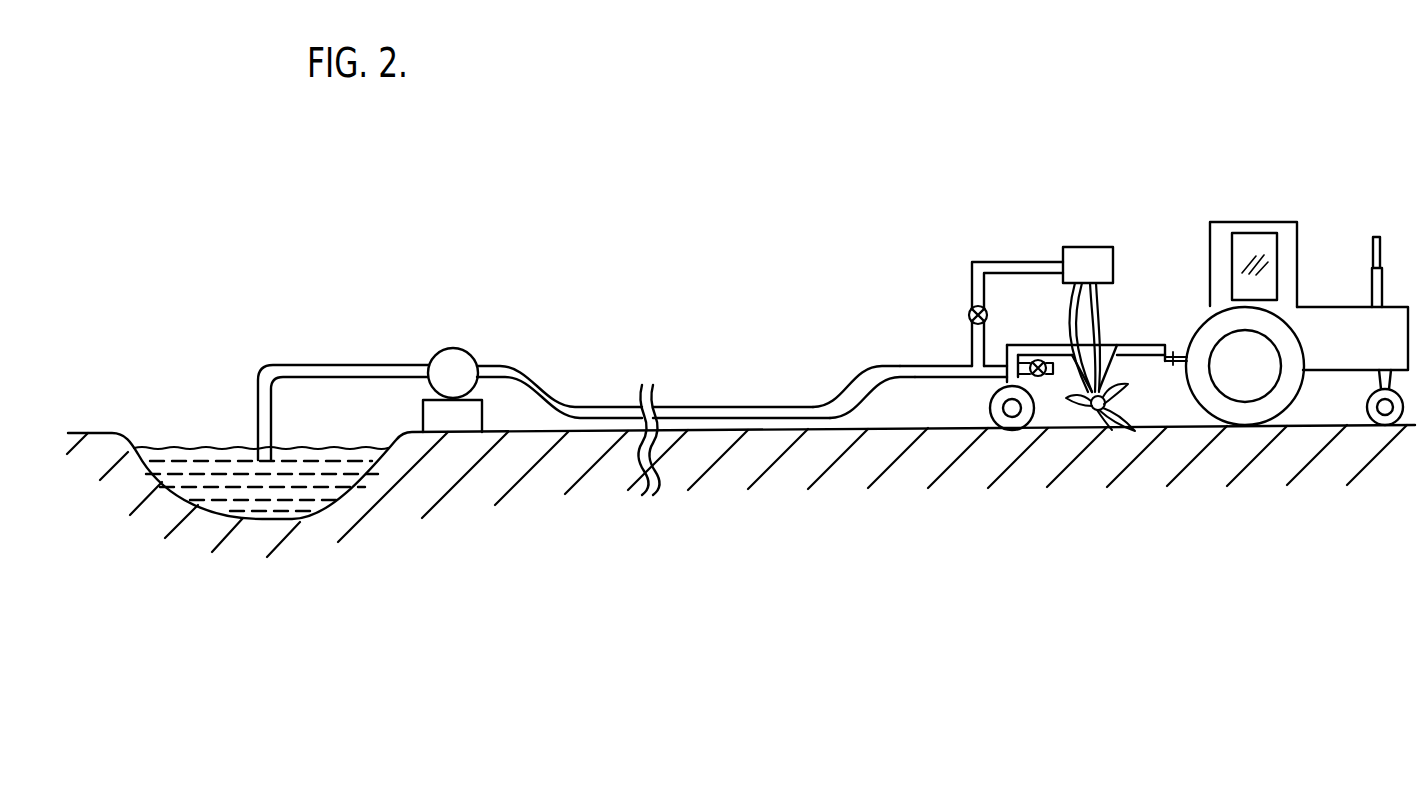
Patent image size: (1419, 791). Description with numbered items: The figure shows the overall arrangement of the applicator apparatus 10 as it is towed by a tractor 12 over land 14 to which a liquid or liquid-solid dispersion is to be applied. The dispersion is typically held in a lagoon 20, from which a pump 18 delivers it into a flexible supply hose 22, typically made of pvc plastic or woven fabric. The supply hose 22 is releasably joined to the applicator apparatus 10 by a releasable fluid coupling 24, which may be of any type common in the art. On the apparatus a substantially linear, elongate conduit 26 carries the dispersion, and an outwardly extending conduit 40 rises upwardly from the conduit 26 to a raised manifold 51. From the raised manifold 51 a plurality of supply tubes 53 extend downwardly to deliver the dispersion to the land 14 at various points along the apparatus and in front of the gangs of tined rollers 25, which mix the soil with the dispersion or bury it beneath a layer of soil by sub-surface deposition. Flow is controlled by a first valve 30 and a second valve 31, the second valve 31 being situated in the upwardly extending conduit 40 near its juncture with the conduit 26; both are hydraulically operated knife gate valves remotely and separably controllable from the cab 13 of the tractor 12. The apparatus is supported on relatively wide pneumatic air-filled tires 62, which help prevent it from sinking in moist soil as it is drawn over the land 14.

The applicator apparatus 10 is at (1052, 247).
The tractor 12 is at (1354, 357).
The cab 13 is at (1250, 223).
The land 14 is at (1172, 430).
The pump 18 is at (451, 348).
The lagoon 20 is at (199, 467).
The flexible supply hose 22 is at (738, 407).
The releasable fluid coupling 24 is at (918, 366).
The gangs of tined rollers 25 is at (1120, 415).
The conduit 26 is at (943, 378).
The first valve 30 is at (1034, 380).
The second valve 31 is at (969, 313).
The outwardly extending conduit 40 is at (975, 282).
The raised manifold 51 is at (1097, 257).
The supply tubes 53 is at (1097, 298).
The pneumatic air-filled tires 62 is at (998, 422).